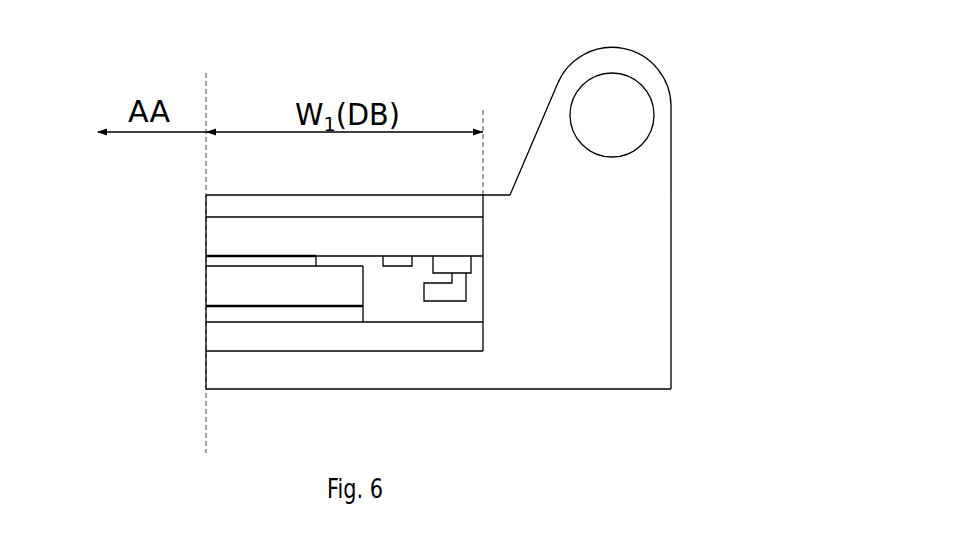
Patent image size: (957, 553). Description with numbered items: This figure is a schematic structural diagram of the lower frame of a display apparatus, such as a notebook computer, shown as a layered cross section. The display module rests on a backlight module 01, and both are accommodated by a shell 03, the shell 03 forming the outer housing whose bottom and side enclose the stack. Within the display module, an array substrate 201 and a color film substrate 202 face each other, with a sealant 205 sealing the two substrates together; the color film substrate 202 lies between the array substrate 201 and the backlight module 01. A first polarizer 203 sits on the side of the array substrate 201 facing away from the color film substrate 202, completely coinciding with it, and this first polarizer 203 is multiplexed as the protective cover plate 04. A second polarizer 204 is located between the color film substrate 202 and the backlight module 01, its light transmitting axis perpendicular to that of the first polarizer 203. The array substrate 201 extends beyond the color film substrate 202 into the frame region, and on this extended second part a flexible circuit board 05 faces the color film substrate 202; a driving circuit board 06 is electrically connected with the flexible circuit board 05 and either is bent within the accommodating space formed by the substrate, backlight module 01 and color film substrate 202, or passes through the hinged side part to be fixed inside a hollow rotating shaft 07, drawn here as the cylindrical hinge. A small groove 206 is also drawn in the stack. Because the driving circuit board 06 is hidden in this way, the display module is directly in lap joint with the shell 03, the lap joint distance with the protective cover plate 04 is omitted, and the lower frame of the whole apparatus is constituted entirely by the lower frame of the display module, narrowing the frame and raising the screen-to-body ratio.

The hollow rotating shaft 07 is at (593, 115).
The first polarizer 203 is at (275, 207).
The protective cover plate 04 is at (217, 208).
The array substrate 201 is at (217, 238).
The sealant 205 is at (217, 262).
The color film substrate 202 is at (217, 283).
The second polarizer 204 is at (217, 313).
The backlight module 01 is at (217, 342).
The shell 03 is at (220, 372).
The groove 206 is at (397, 266).
The flexible circuit board 05 is at (450, 263).
The driving circuit board 06 is at (450, 290).